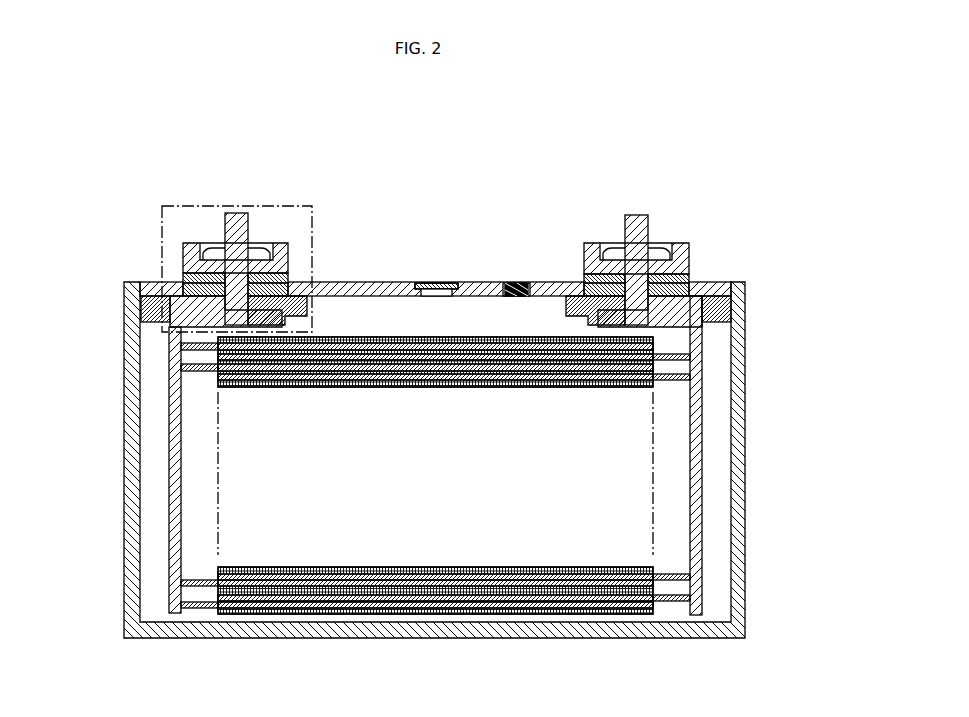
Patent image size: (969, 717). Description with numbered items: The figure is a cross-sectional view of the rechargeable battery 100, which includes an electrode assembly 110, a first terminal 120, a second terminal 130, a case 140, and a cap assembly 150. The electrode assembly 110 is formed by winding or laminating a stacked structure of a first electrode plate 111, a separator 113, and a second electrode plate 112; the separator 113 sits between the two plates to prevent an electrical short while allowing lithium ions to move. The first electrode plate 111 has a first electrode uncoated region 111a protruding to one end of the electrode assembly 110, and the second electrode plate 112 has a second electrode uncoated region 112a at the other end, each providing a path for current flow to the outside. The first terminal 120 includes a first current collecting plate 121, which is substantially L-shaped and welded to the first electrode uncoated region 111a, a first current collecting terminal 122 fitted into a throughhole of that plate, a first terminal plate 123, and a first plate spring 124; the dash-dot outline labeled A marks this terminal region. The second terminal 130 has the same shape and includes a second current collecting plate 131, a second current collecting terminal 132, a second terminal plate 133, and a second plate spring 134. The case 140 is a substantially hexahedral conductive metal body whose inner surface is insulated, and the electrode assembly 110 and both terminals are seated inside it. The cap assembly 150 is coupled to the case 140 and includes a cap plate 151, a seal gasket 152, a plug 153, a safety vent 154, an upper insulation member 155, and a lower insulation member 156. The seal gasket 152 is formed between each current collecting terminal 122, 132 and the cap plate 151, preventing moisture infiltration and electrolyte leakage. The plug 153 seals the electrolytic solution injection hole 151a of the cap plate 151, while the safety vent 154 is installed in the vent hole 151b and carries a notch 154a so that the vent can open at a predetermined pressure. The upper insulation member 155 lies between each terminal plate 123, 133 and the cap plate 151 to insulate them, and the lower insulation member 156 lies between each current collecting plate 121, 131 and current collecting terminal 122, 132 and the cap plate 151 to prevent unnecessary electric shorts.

The rechargeable battery 100 is at (437, 409).
The electrode assembly 110 is at (433, 514).
The first electrode plate 111 is at (321, 614).
The first electrode uncoated region 111a is at (199, 608).
The second electrode plate 112 is at (583, 614).
The second electrode uncoated region 112a is at (670, 601).
The separator 113 is at (450, 597).
The first terminal 120 is at (187, 377).
The first current collecting plate 121 is at (167, 444).
The first current collecting terminal 122 is at (232, 212).
The first terminal plate 123 is at (183, 250).
The first plate spring 124 is at (222, 246).
The second terminal 130 is at (694, 380).
The second current collecting plate 131 is at (704, 444).
The second current collecting terminal 132 is at (641, 213).
The second terminal plate 133 is at (692, 250).
The second plate spring 134 is at (652, 243).
The case 140 is at (742, 382).
The cap assembly 150 is at (435, 244).
The cap plate 151 is at (361, 283).
The electrolytic solution injection hole 151a is at (520, 297).
The vent hole 151b is at (437, 297).
The seal gasket 152 is at (290, 292).
The plug 153 is at (517, 283).
The safety vent 154 is at (440, 261).
The notch 154a is at (433, 283).
The upper insulation member 155 is at (288, 278).
The lower insulation member 156 is at (302, 314).
The detail region A is at (282, 205).